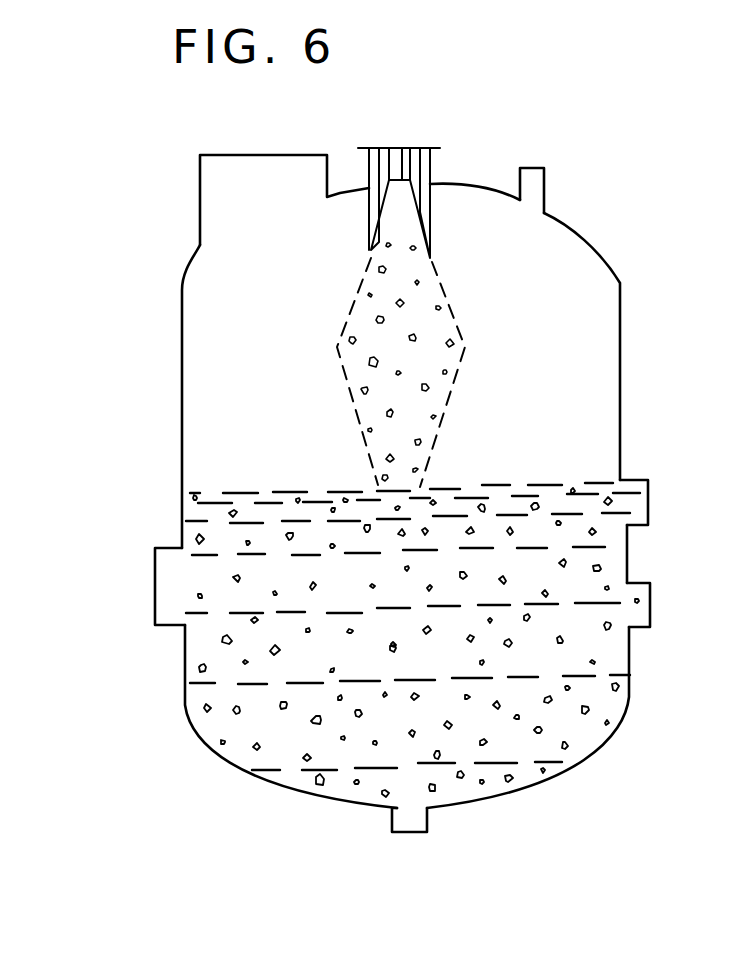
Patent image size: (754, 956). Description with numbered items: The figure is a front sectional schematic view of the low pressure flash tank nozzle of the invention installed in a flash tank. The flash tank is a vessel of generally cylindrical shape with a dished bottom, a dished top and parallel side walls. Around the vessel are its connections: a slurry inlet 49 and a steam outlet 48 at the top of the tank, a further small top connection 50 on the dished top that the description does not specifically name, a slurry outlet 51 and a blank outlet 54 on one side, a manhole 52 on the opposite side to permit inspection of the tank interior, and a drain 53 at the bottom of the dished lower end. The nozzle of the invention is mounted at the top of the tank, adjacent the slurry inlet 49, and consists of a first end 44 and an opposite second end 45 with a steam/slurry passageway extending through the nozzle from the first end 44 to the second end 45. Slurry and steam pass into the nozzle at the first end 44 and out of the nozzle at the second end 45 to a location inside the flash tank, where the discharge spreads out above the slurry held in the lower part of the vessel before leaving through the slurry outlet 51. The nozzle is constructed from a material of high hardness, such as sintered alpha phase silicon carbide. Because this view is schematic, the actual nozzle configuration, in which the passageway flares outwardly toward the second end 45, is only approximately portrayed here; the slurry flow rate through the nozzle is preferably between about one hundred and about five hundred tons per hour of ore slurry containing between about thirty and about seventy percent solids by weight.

The first end 44 is at (393, 148).
The second end 45 is at (372, 260).
The steam outlet 48 is at (258, 155).
The slurry inlet 49 is at (407, 148).
The vent port 50 is at (545, 190).
The slurry outlet 51 is at (704, 432).
The manhole 52 is at (153, 620).
The drain 53 is at (410, 833).
The blank outlet 54 is at (652, 600).